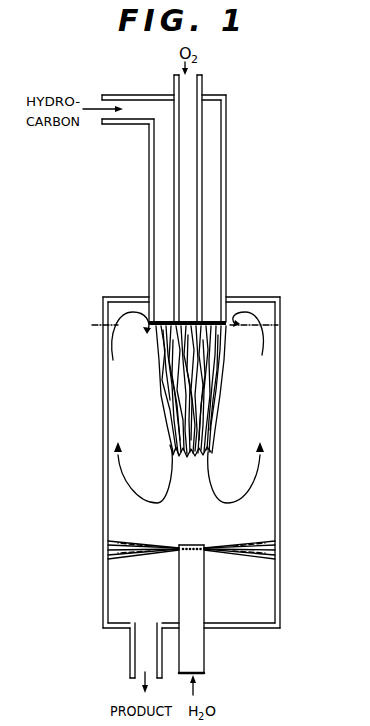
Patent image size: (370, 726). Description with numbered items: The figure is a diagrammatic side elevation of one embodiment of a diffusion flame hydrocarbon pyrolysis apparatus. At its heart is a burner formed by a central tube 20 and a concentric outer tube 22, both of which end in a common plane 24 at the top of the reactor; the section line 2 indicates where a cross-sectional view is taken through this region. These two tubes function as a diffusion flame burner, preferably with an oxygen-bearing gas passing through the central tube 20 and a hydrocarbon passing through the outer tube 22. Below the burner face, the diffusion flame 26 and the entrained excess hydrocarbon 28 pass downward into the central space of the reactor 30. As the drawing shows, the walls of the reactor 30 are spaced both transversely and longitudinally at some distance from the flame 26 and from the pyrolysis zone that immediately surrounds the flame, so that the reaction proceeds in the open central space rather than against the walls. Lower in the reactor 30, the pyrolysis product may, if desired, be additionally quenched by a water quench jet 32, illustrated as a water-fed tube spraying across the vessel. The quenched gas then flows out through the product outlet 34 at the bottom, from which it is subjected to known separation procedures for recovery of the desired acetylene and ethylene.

The section line 2- 2 is at (101, 352).
The central tube 20 is at (202, 177).
The concentric outer tube 22 is at (226, 219).
The common plane 24 is at (277, 306).
The diffusion flame 26 is at (200, 389).
The entrained excess hydrocarbon 28 is at (163, 346).
The reactor 30 is at (281, 452).
The water quench jet 32 is at (183, 545).
The product outlet 34 is at (130, 644).